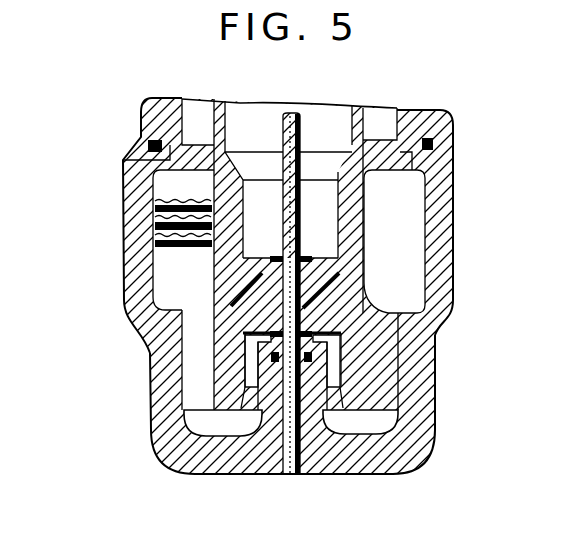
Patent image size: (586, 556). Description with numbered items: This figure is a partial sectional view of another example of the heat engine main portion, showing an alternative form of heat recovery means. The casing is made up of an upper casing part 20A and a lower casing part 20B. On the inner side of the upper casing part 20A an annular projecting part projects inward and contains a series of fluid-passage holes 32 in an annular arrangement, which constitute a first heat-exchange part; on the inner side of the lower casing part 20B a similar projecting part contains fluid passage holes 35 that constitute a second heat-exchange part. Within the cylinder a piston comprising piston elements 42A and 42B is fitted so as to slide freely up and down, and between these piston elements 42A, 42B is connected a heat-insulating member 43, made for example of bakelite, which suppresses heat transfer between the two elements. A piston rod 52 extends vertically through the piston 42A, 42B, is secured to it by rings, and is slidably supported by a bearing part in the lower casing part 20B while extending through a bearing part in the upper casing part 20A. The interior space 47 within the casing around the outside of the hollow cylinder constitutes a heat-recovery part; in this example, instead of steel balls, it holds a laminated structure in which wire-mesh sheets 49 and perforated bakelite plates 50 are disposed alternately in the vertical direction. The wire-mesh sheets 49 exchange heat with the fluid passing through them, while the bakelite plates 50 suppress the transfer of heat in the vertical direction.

The upper casing part 20A is at (427, 125).
The lower casing part 20B is at (410, 432).
The fluid-passage holes 32 is at (186, 115).
The fluid passage holes 35 is at (190, 378).
The piston element 42A is at (348, 192).
The piston element 42B is at (347, 363).
The heat-insulating member 43 is at (345, 284).
The interior space 47 is at (172, 290).
The wire-mesh sheets 49 is at (170, 198).
The perforated bakelite plates 50 is at (155, 208).
The piston rod 52 is at (298, 126).